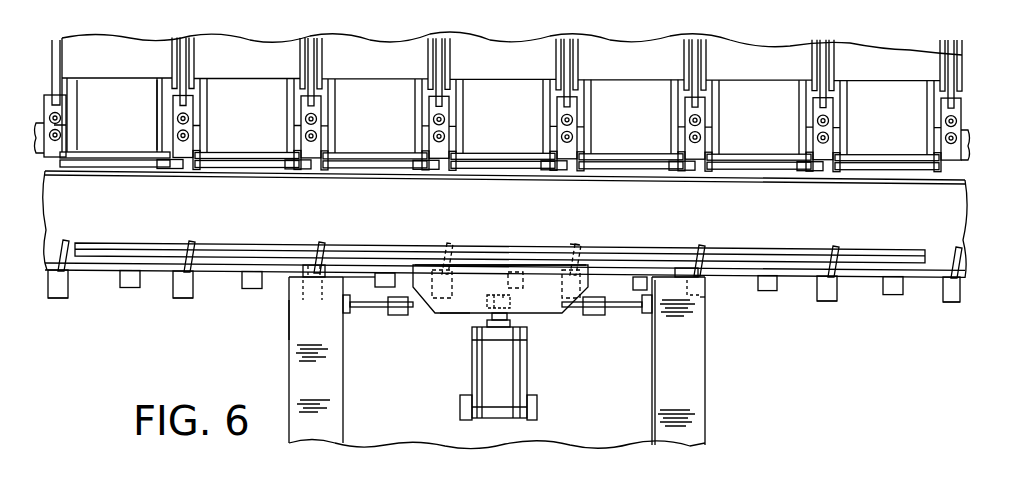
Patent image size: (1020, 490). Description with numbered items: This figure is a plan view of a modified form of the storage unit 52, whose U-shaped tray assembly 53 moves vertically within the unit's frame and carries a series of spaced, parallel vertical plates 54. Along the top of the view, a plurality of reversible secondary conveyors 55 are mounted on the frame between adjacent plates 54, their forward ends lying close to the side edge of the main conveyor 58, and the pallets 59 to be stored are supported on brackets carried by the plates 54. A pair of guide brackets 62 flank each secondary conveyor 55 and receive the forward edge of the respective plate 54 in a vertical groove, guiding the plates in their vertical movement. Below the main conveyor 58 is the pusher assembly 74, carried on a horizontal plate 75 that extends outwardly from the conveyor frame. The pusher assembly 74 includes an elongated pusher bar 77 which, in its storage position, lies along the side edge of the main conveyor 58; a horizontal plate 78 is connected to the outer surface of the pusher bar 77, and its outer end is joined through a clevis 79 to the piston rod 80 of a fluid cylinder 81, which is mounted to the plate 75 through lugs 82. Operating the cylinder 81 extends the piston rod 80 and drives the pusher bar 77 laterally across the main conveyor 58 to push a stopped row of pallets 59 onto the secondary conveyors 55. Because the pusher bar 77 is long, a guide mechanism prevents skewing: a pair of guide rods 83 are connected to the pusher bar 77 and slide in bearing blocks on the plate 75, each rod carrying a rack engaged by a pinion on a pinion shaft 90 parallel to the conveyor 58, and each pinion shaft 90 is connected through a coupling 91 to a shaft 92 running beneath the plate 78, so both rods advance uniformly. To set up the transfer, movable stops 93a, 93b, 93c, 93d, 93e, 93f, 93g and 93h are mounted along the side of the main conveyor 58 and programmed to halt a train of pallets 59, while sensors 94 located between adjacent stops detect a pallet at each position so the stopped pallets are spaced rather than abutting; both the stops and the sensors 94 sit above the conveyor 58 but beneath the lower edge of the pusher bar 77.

The storage unit 52 is at (703, 34).
The tray assembly 53 is at (444, 31).
The vertical plates 54 is at (62, 22).
The secondary conveyors 55 is at (243, 90).
The main conveyor 58 is at (92, 211).
The pallets 59 is at (128, 50).
The guide brackets 62 is at (173, 157).
The pusher assembly 74 is at (443, 320).
The horizontal plate 75 is at (420, 415).
The pusher bar 77 is at (352, 253).
The horizontal plate 78 is at (462, 285).
The clevis 79 is at (530, 313).
The piston rod 80 is at (510, 323).
The fluid cylinder 81 is at (520, 373).
The lugs 82 is at (527, 422).
The guide rods 83 is at (323, 268).
The pinion shaft 90 is at (373, 308).
The coupling 91 is at (398, 315).
The shaft 92 is at (417, 303).
The movable stop 93a is at (58, 291).
The movable stop 93b is at (183, 291).
The movable stop 93c is at (310, 297).
The movable stop 93d is at (455, 303).
The movable stop 93e is at (558, 258).
The movable stop 93f is at (700, 297).
The movable stop 93g is at (832, 302).
The movable stop 93h is at (952, 296).
The sensors 94 is at (133, 288).